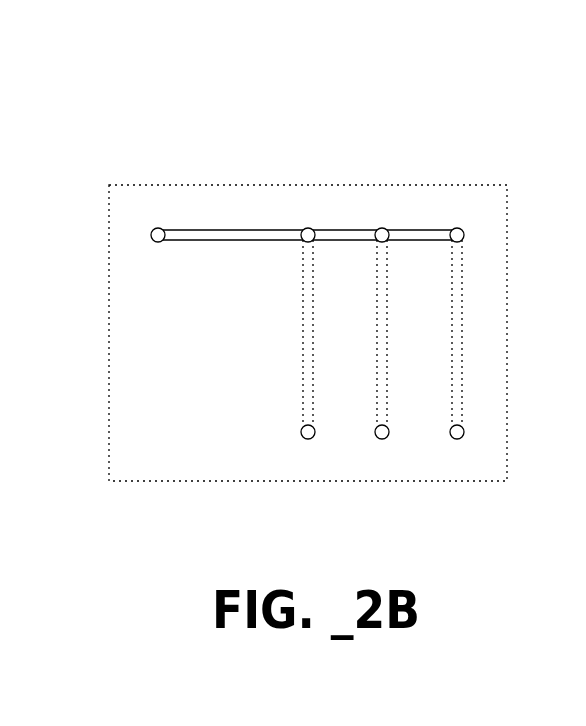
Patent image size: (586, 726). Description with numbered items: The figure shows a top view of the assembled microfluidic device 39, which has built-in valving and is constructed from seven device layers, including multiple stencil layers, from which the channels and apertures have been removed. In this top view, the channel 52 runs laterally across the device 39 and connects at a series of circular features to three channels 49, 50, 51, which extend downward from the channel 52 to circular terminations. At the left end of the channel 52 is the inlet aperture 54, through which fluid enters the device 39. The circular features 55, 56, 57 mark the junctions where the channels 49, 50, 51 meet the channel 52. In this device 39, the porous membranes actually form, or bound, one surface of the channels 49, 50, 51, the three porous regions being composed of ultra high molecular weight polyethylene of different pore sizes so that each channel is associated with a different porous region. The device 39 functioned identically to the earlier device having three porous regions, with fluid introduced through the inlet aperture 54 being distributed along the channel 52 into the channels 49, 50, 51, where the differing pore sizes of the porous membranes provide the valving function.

The microfluidic device 39 is at (80, 60).
The channel 49 is at (313, 415).
The channel 50 is at (387, 415).
The channel 51 is at (462, 415).
The channel 52 is at (234, 230).
The inlet aperture 54 is at (152, 231).
The via connection 55 is at (304, 229).
The via connection 56 is at (385, 229).
The via connection 57 is at (462, 230).